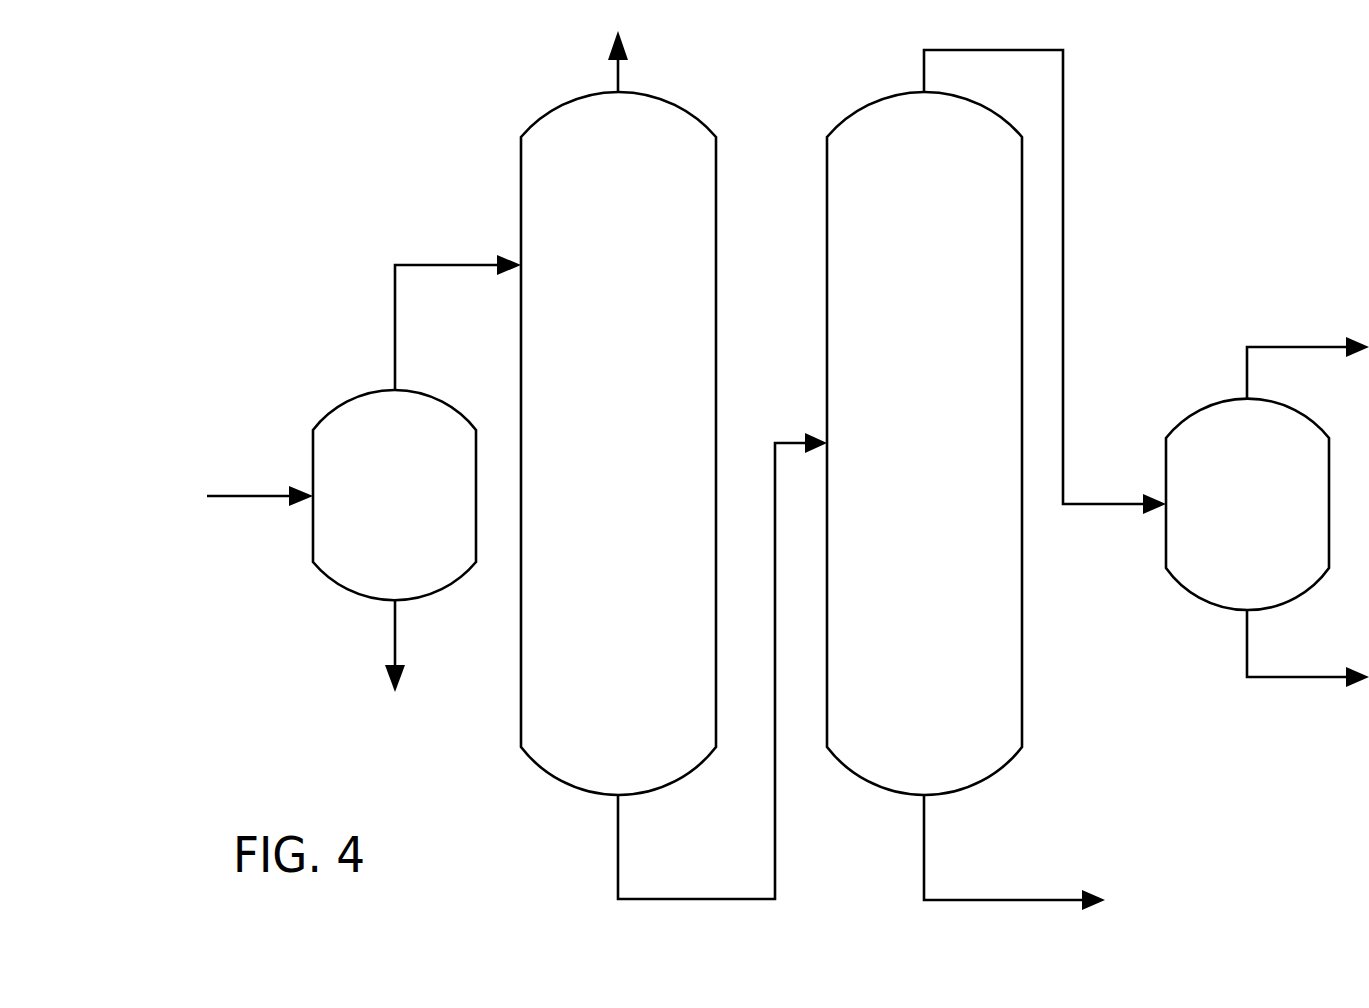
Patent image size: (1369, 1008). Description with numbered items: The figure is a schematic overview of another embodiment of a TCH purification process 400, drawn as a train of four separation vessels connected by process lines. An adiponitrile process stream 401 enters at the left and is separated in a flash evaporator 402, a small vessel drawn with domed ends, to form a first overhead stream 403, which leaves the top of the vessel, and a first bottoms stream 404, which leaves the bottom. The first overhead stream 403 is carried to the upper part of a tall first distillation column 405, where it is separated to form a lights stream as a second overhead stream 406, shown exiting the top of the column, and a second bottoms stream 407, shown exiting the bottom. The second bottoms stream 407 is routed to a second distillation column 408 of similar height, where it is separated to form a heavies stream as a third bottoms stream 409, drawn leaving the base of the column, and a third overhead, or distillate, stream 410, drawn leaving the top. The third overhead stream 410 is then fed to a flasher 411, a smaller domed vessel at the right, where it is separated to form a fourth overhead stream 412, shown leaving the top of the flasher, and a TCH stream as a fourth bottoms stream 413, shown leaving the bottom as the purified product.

The TCH purification process 400 is at (323, 145).
The adiponitrile process stream 401 is at (228, 496).
The flash evaporator 402 is at (316, 568).
The first overhead stream 403 is at (396, 265).
The first bottoms stream 404 is at (395, 642).
The first distillation column 405 is at (520, 172).
The second overhead stream 406 is at (618, 73).
The second bottoms stream 407 is at (618, 846).
The second distillation column 408 is at (827, 256).
The third bottoms stream 409 is at (924, 838).
The third overhead stream 410 is at (924, 71).
The flasher 411 is at (1195, 600).
The fourth overhead stream 412 is at (1283, 347).
The fourth bottoms stream 413 is at (1293, 677).